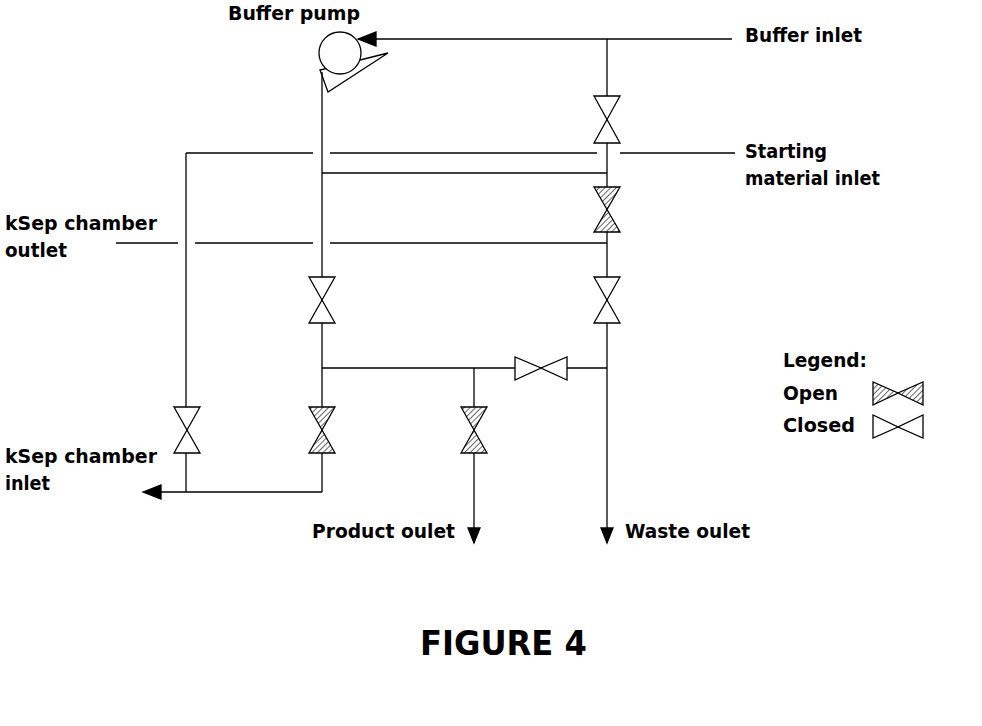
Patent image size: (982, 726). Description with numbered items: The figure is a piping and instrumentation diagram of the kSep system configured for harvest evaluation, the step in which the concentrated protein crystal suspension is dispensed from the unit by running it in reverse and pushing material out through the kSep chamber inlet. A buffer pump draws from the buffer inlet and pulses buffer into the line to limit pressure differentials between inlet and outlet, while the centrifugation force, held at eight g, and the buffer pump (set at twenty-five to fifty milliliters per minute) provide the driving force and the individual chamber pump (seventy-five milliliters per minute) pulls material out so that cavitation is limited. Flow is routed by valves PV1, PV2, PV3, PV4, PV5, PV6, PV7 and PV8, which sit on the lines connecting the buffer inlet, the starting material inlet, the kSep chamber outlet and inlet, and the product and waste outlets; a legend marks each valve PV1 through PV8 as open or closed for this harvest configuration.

The valve PV1 (kSep chamber inlet, closed) PV1 is at (211, 430).
The valve PV2 (product outlet, open) PV2 is at (498, 430).
The valve PV3 (open) PV3 is at (345, 430).
The valve PV4 (closed) PV4 is at (541, 357).
The valve PV5 (closed) PV5 is at (346, 300).
The valve PV6 (waste outlet, closed) PV6 is at (633, 300).
The valve PV7 (starting material inlet, open) PV7 is at (633, 209).
The valve PV8 (buffer inlet, closed) PV8 is at (633, 119).